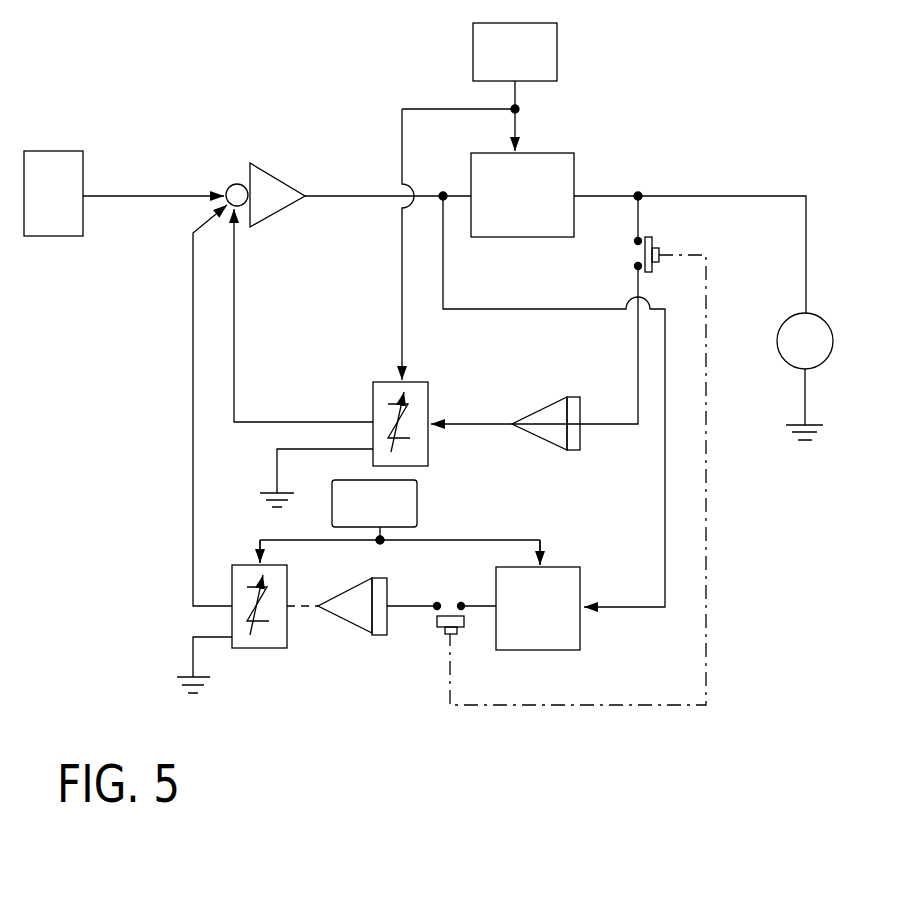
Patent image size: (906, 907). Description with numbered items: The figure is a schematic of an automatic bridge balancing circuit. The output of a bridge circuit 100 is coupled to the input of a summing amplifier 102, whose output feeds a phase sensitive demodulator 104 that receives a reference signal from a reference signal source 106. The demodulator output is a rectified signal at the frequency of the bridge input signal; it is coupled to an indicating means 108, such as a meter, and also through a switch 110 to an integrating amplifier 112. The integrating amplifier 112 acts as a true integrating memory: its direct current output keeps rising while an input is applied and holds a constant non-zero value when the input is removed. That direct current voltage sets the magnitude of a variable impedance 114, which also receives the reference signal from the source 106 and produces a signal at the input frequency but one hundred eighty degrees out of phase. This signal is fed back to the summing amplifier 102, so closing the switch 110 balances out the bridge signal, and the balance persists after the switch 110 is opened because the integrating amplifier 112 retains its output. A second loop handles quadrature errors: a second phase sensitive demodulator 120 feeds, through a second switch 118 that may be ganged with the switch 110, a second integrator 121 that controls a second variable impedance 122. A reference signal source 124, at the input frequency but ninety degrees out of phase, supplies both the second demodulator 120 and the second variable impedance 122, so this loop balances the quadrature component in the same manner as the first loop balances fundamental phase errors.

The bridge circuit 100 is at (58, 152).
The summing amplifier 102 is at (251, 162).
The phase sensitive demodulator 104 is at (559, 161).
The reference signal source 106 is at (552, 53).
The indicating means 108 is at (806, 318).
The switch 110 is at (632, 252).
The integrating amplifier 112 is at (532, 429).
The variable impedance 114 is at (409, 393).
The second switch 118 is at (457, 585).
The second phase sensitive demodulator 120 is at (560, 638).
The second integrator 121 is at (353, 614).
The second variable impedance 122 is at (255, 640).
The reference signal source 124 is at (420, 500).